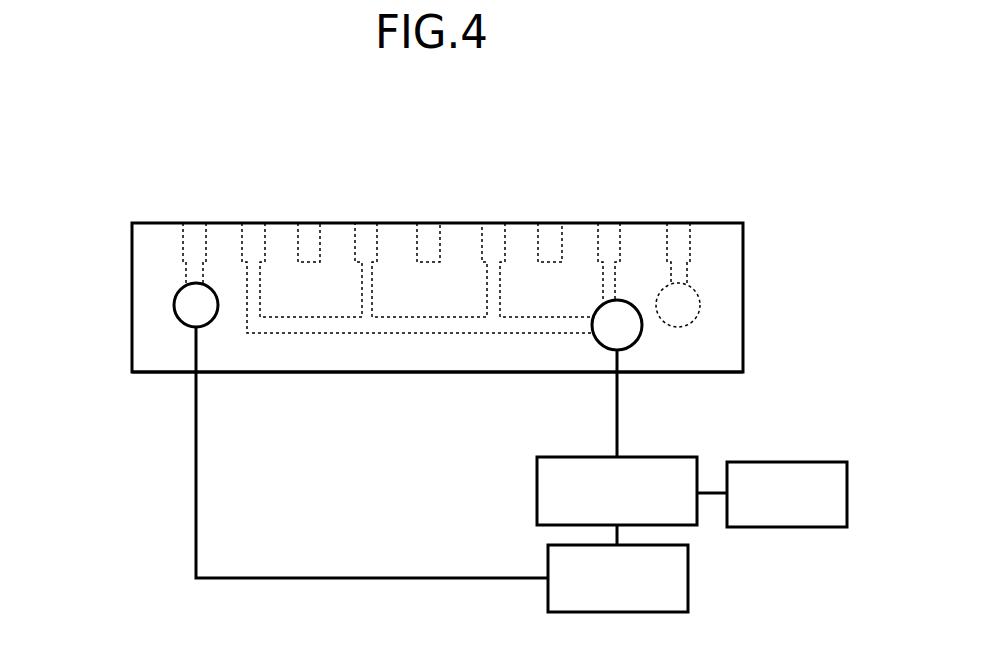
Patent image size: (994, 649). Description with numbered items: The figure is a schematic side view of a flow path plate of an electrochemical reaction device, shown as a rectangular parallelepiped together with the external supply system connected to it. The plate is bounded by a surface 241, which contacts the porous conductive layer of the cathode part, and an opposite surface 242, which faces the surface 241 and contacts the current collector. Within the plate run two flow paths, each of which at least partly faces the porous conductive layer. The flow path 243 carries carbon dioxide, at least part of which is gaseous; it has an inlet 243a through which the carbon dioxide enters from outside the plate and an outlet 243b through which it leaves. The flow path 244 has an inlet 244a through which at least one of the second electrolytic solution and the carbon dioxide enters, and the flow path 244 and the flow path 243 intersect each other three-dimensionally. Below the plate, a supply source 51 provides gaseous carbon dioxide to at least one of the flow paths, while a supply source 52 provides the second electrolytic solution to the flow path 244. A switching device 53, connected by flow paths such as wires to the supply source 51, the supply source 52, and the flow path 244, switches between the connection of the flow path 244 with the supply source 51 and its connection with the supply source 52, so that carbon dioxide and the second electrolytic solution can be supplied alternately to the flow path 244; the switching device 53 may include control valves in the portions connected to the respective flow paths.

The surface 241 is at (460, 222).
The surface 242 is at (352, 373).
The flow path 243 is at (185, 238).
The inlet 243a is at (176, 296).
The outlet 243b is at (697, 316).
The flow path 244 is at (355, 238).
The inlet 244a is at (635, 340).
The supply source 51 is at (689, 580).
The supply source 52 is at (848, 510).
The switching device 53 is at (537, 493).